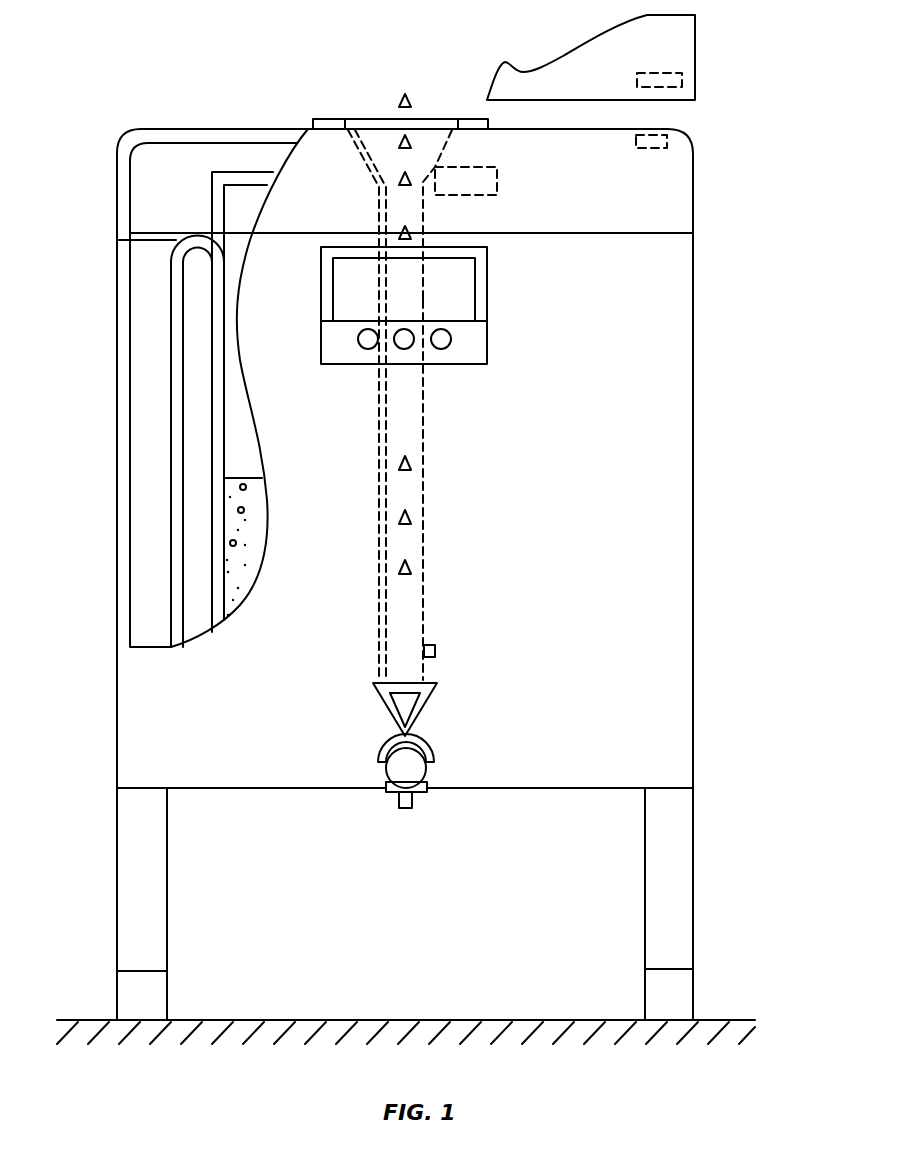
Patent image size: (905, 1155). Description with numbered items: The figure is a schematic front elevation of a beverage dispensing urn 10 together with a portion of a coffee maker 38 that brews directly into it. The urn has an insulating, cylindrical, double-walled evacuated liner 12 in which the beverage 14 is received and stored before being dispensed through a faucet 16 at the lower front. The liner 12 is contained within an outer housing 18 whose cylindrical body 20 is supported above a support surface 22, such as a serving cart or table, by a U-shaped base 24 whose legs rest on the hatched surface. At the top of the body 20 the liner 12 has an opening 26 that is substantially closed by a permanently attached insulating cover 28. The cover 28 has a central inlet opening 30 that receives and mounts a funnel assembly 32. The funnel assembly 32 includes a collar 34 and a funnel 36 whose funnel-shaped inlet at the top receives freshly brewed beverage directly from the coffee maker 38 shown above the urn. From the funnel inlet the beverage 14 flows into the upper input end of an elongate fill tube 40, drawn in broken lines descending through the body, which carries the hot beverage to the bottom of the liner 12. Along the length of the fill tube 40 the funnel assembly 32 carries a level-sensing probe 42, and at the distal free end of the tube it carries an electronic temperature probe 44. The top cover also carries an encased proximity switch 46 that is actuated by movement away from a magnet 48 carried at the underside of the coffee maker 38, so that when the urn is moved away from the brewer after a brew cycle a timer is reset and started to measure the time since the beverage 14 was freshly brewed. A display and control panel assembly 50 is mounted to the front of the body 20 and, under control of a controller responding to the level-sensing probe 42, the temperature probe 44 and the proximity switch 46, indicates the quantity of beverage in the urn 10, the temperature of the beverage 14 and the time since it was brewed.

The dispensing urn 10 is at (285, 76).
The liner 12 is at (193, 350).
The beverage 14 is at (255, 518).
The faucet 16 is at (386, 714).
The outer housing 18 is at (128, 425).
The cylindrical body 20 is at (683, 405).
The support surface 22 is at (737, 1018).
The U-shaped base 24 is at (590, 895).
The opening 26 is at (253, 200).
The insulating cover 28 is at (683, 191).
The central inlet opening 30 is at (349, 119).
The funnel assembly 32 is at (416, 448).
The collar 34 is at (473, 117).
The funnel 36 is at (452, 129).
The coffee maker 38 is at (682, 33).
The fill tube 40 is at (423, 583).
The level-sensing probe 42 is at (380, 548).
The electronic temperature probe 44 is at (435, 650).
The proximity switch 46 is at (667, 142).
The magnet 48 is at (690, 81).
The display and control panel assembly 50 is at (463, 306).